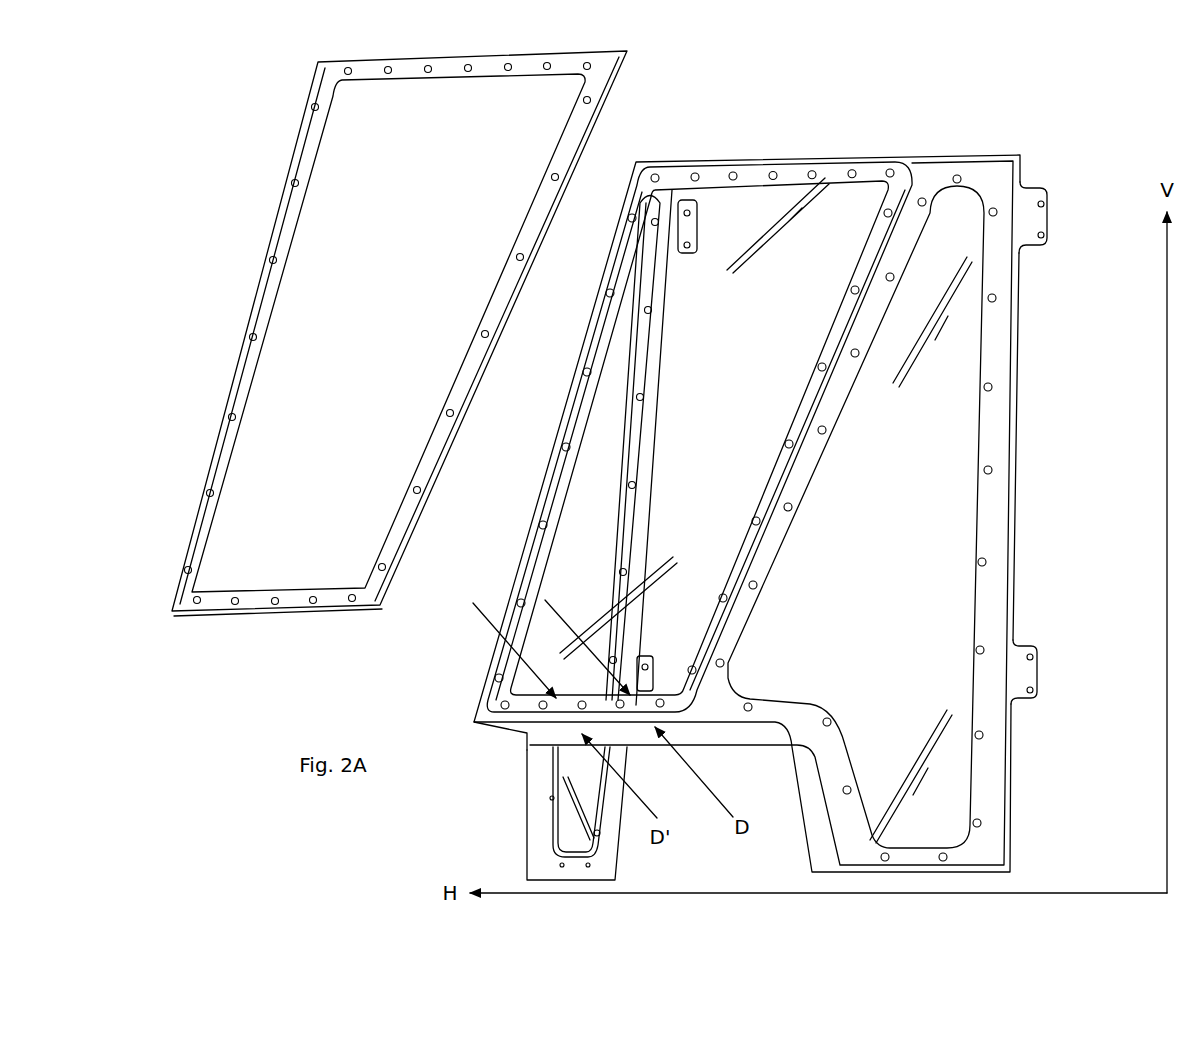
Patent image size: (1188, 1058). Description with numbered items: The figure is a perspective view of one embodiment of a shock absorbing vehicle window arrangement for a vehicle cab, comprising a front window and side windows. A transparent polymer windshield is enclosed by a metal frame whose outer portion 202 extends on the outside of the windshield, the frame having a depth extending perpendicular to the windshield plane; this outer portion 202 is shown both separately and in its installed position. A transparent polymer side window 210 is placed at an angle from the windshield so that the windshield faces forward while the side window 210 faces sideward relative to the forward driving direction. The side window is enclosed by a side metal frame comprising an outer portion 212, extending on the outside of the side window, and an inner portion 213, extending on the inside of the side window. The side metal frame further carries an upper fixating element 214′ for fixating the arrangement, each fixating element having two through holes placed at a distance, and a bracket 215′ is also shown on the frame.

The outer portion of the metal frame 202 is at (285, 217).
The transparent polymer side window 210 is at (747, 513).
The outer portion of the side metal frame 212 is at (1003, 440).
The inner portion of the side metal frame 213 is at (660, 363).
The upper fixating element 214′ is at (1038, 218).
The bracket 215′ is at (686, 230).